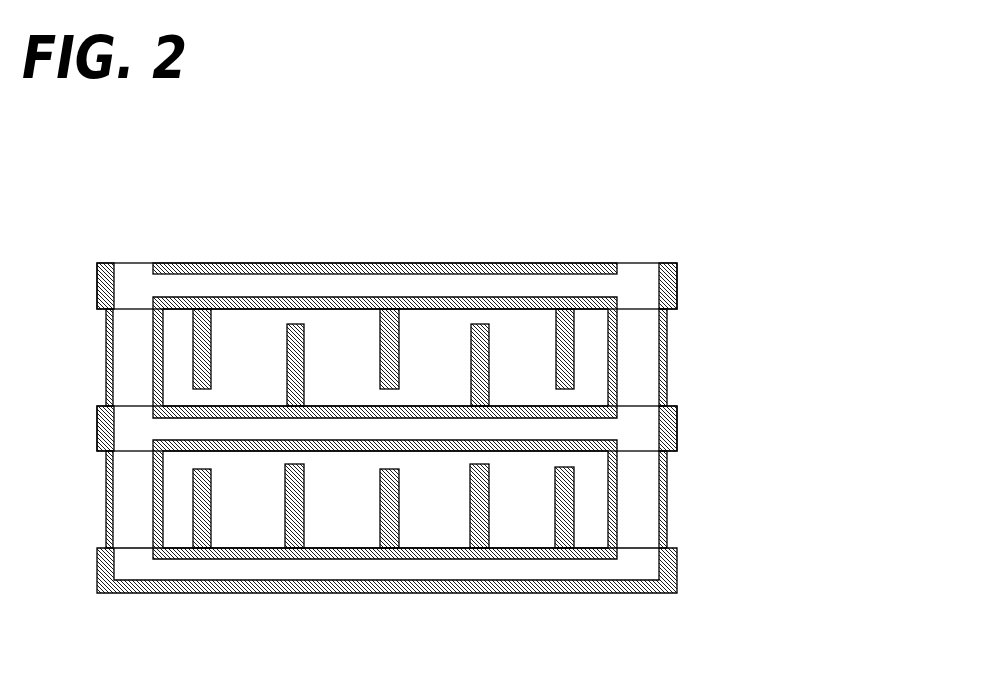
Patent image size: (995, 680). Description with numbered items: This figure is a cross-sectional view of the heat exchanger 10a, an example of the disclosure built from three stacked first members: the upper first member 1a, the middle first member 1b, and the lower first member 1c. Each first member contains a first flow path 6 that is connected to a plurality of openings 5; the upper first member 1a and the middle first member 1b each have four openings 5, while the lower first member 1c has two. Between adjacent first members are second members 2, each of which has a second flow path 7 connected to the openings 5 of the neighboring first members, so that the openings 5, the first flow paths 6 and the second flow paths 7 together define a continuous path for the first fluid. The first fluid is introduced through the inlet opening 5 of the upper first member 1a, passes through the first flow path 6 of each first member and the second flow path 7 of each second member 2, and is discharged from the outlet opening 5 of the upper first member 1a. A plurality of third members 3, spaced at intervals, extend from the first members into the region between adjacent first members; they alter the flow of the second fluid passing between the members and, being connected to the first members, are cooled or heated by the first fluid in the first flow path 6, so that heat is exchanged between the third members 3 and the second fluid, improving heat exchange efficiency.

The heat exchanger 10a is at (766, 118).
The upper first member 1a is at (393, 270).
The middle first member 1b is at (667, 435).
The lower first member 1c is at (670, 568).
The opening 5 is at (133, 303).
The first flow path 6 is at (252, 288).
The second flow path 7 is at (132, 373).
The second member 2 is at (105, 502).
The third member 3 is at (393, 520).